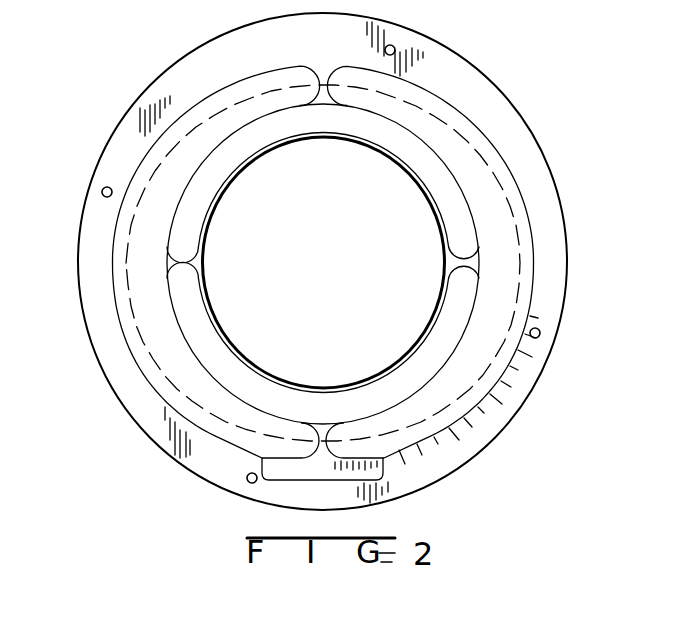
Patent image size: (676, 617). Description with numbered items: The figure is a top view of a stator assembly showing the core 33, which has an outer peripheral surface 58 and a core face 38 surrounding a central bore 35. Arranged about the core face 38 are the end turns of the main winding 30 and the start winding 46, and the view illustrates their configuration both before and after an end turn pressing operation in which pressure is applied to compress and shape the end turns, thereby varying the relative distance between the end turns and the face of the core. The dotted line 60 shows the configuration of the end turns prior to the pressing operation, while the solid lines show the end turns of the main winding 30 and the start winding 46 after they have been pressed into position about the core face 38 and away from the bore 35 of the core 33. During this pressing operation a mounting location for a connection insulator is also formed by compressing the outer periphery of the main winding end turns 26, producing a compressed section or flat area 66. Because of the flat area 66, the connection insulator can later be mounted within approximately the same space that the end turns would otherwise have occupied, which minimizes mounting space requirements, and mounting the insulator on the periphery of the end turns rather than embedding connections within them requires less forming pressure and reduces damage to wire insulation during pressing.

The main winding end turns 26 is at (407, 438).
The main winding 30 is at (497, 387).
The core 33 is at (80, 300).
The bore 35 is at (402, 207).
The core face 38 is at (207, 465).
The start winding 46 is at (477, 309).
The outer peripheral surface 58 is at (120, 125).
The dotted line 60 is at (155, 355).
The flat area 66 is at (323, 480).